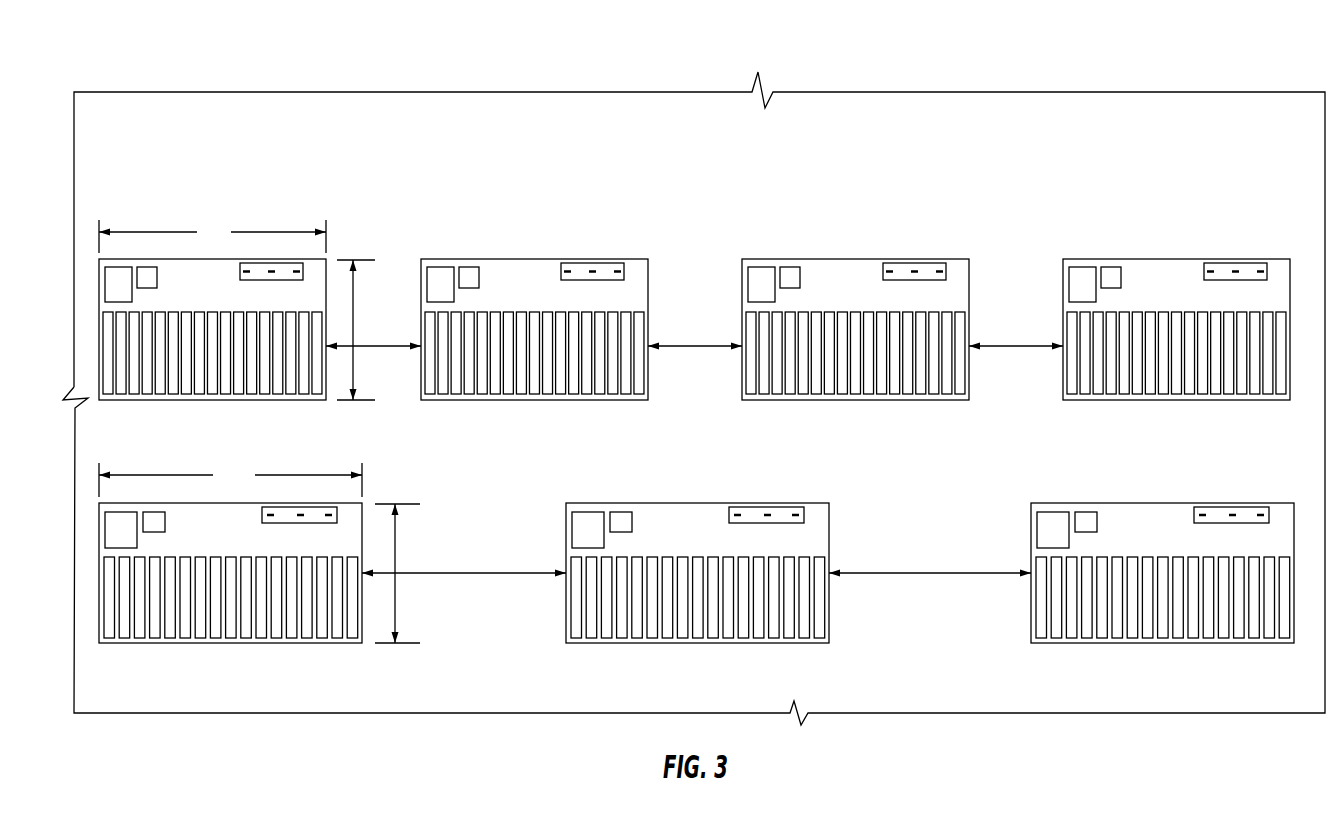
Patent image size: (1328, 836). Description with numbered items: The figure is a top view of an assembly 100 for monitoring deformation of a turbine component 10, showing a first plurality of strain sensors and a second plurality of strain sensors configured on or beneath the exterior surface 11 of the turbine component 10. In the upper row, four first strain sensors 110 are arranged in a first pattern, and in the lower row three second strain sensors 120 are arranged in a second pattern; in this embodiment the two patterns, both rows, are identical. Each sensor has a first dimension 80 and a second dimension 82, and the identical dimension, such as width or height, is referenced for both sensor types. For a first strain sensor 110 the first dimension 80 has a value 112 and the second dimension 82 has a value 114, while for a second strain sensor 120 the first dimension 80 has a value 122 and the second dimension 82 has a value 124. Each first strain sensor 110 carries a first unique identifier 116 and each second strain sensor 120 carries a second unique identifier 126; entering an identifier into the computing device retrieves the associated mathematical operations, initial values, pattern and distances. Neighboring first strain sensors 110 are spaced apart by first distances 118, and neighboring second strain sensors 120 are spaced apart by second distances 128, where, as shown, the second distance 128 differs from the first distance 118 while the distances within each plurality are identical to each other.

The turbine component 10 is at (1022, 75).
The exterior surface 11 is at (1253, 97).
The first dimension 80 is at (178, 218).
The second dimension 82 is at (373, 277).
The assembly 100 is at (988, 182).
The first strain sensor 110 is at (268, 185).
The value of first dimension of first strain sensor 112 is at (212, 233).
The value of second dimension of first strain sensor 114 is at (356, 334).
The first unique identifier 116 is at (270, 263).
The first distance 118 is at (372, 350).
The second strain sensor 120 is at (272, 472).
The value of first dimension of second strain sensor 122 is at (230, 478).
The value of second dimension of second strain sensor 124 is at (394, 562).
The second unique identifier 126 is at (298, 512).
The second distance 128 is at (448, 575).